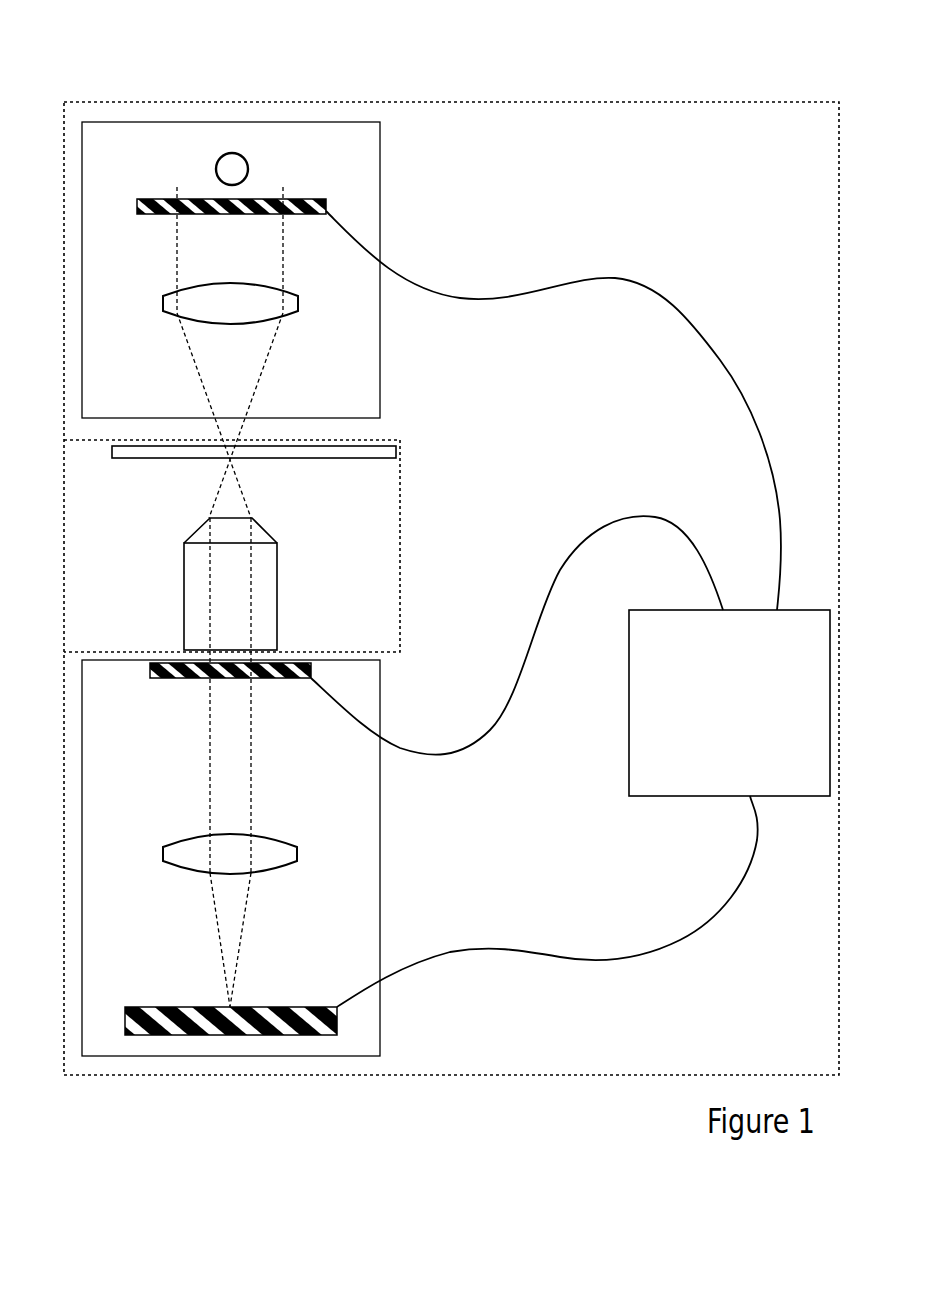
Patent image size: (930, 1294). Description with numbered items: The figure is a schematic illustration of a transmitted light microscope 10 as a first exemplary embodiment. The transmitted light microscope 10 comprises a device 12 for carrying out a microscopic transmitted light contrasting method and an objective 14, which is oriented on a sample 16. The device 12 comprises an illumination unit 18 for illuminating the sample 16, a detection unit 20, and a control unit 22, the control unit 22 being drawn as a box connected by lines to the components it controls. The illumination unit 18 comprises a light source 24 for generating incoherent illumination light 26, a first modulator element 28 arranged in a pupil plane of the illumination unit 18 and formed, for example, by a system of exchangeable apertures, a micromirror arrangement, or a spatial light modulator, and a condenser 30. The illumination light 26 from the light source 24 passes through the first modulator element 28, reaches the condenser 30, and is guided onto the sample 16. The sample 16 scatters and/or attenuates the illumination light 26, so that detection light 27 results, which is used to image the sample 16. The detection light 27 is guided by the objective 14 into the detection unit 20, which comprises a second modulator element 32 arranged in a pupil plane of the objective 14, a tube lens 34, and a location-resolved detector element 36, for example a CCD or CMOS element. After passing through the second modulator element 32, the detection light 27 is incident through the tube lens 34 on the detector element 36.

The transmitted light microscope 10 is at (655, 60).
The device 12 is at (839, 215).
The objective 14 is at (278, 593).
The sample 16 is at (376, 460).
The illumination unit 18 is at (381, 193).
The detection unit 20 is at (380, 863).
The control unit 22 is at (629, 758).
The light source 24 is at (249, 168).
The illumination light 26 is at (176, 248).
The detection light 27 is at (243, 498).
The first modulator element 28 is at (326, 200).
The condenser 30 is at (299, 303).
The second modulator element 32 is at (150, 671).
The tube lens 34 is at (292, 842).
The detector element 36 is at (310, 1007).